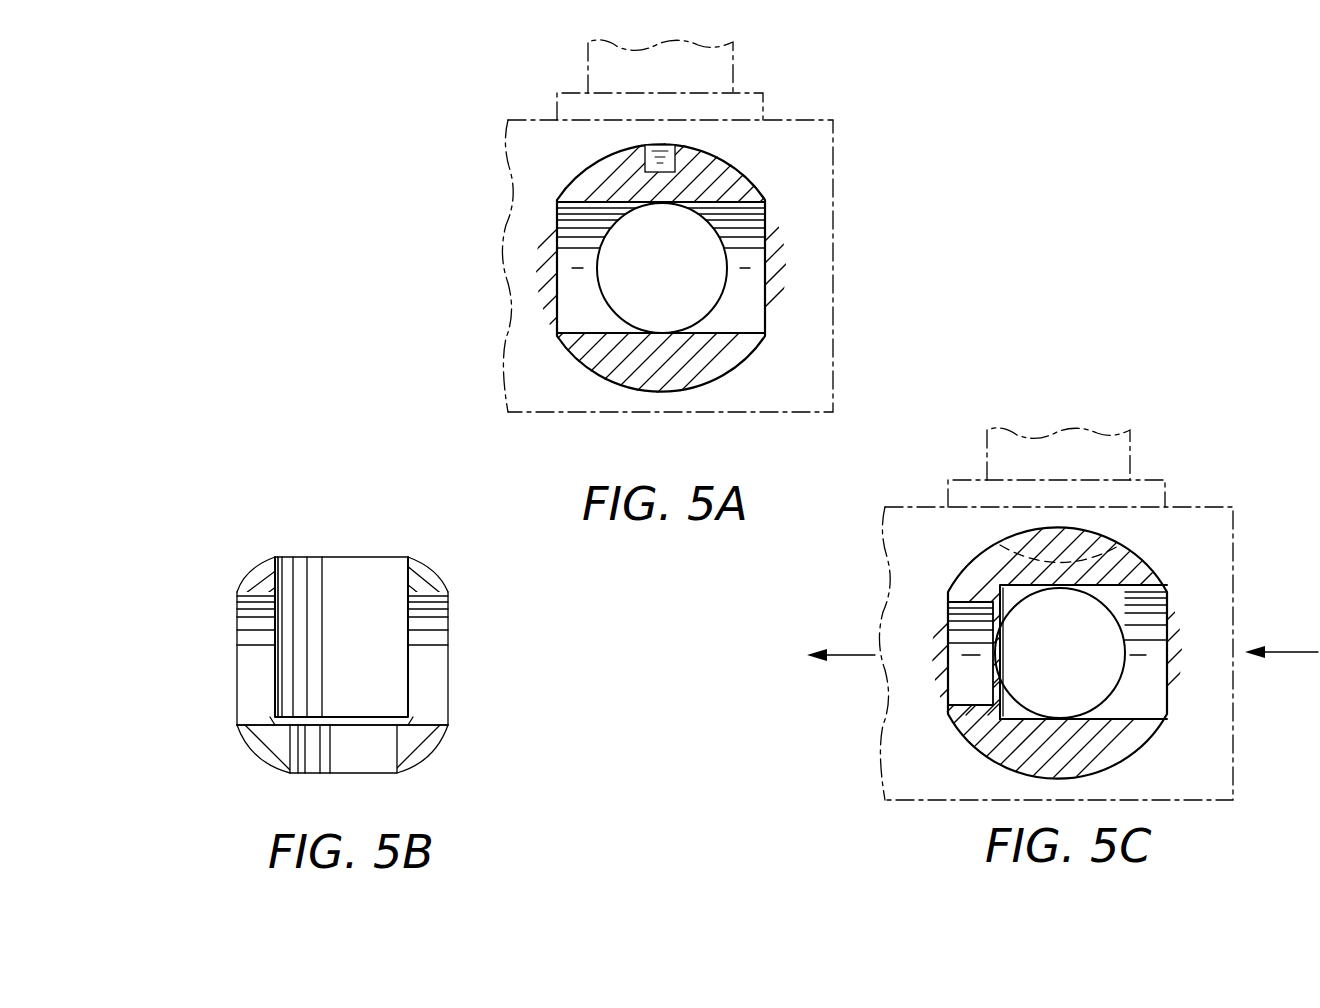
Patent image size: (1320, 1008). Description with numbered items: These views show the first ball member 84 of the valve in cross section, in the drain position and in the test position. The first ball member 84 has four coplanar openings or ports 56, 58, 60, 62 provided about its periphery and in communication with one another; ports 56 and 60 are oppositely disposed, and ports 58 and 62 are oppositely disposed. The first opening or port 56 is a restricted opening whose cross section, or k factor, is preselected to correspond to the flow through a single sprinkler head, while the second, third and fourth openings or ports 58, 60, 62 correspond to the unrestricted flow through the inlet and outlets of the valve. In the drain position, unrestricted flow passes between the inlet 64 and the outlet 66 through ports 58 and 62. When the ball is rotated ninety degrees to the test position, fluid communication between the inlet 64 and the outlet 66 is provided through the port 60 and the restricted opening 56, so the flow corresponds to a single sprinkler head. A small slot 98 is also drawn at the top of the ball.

In FIG. 5B, the first opening or port 56 is at (343, 765).
In FIG. 5C, the first opening or port 56 is at (960, 655).
In FIG. 5A, the second opening or port 58 is at (758, 268).
In FIG. 5B, the second opening or port 58 is at (437, 650).
In FIG. 5B, the third opening or port 60 is at (342, 773).
In FIG. 5C, the third opening or port 60 is at (1150, 653).
In FIG. 5A, the fourth opening or port 62 is at (572, 268).
In FIG. 5B, the fourth opening or port 62 is at (252, 650).
In FIG. 5A, the inlet 64 is at (843, 238).
In FIG. 5A, the outlet 66 is at (503, 268).
In FIG. 5A, the first ball member 84 is at (660, 375).
In FIG. 5B, the first ball member 84 is at (252, 568).
In FIG. 5C, the first ball member 84 is at (1125, 562).
In FIG. 5A, the slot 98 is at (660, 158).